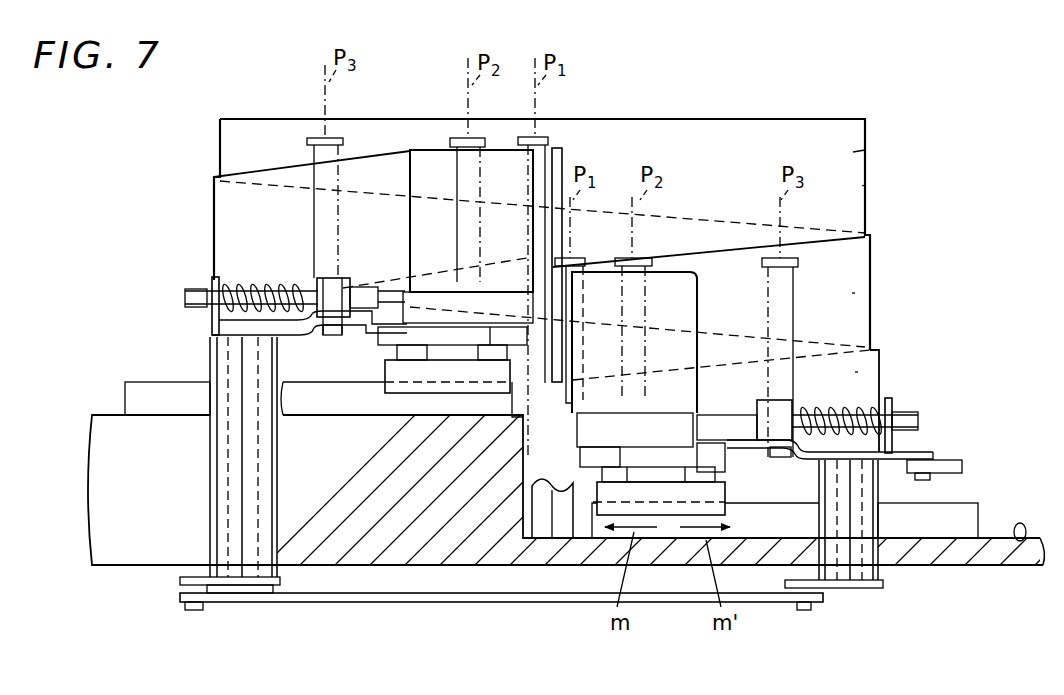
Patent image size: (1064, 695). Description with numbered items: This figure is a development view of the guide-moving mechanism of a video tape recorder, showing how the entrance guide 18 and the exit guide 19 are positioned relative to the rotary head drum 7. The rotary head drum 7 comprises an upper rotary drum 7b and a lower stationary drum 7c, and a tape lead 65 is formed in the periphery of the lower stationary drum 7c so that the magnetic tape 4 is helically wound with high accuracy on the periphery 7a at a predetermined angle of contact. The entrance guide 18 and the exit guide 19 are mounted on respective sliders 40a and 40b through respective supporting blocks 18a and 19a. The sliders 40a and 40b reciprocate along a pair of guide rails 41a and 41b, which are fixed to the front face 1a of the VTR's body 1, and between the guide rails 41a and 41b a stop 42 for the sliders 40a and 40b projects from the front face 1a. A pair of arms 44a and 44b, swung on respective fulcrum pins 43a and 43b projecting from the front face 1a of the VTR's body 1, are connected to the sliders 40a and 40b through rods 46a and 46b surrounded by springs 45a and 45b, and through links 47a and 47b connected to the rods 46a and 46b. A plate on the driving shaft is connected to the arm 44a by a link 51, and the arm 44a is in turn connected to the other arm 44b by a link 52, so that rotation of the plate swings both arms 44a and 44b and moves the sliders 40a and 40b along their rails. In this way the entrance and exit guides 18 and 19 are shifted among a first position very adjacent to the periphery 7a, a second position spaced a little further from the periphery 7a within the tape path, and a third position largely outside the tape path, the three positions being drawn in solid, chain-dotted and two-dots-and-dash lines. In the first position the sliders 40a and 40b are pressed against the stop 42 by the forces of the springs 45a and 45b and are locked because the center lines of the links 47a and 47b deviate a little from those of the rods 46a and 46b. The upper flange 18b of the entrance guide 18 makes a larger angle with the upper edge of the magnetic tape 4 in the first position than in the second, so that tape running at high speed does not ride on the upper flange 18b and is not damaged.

The VTR's body 1 is at (975, 555).
The front face 1a is at (1017, 541).
The magnetic tape 4 is at (855, 293).
The rotary head drum 7 is at (792, 118).
The periphery 7a is at (868, 185).
The upper rotary drum 7b is at (853, 152).
The lower stationary drum 7c is at (858, 372).
The entrance guide 18 is at (565, 277).
The supporting block 18a is at (677, 290).
The upper flange 18b is at (585, 258).
The exit guide 19 is at (313, 185).
The supporting block 19a is at (497, 163).
The slider 40a is at (667, 507).
The slider 40b is at (460, 385).
The guide rail 41a is at (928, 522).
The guide rail 41b is at (137, 397).
The stop 42 is at (562, 522).
The fulcrum pin 43a is at (860, 563).
The fulcrum pin 43b is at (270, 545).
The arm 44a is at (857, 455).
The arm 44b is at (208, 321).
The spring 45a is at (863, 412).
The spring 45b is at (232, 288).
The rod 46a is at (912, 418).
The rod 46b is at (230, 300).
The link 47a is at (740, 437).
The link 47b is at (367, 290).
The link 51 is at (955, 473).
The link 52 is at (517, 604).
The tape lead 65 is at (875, 350).